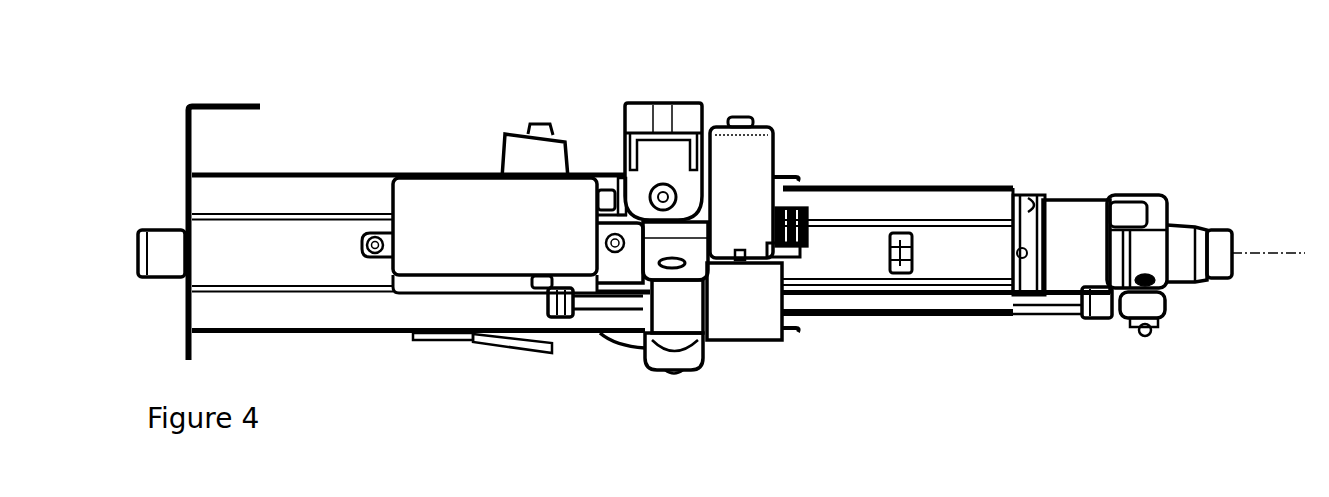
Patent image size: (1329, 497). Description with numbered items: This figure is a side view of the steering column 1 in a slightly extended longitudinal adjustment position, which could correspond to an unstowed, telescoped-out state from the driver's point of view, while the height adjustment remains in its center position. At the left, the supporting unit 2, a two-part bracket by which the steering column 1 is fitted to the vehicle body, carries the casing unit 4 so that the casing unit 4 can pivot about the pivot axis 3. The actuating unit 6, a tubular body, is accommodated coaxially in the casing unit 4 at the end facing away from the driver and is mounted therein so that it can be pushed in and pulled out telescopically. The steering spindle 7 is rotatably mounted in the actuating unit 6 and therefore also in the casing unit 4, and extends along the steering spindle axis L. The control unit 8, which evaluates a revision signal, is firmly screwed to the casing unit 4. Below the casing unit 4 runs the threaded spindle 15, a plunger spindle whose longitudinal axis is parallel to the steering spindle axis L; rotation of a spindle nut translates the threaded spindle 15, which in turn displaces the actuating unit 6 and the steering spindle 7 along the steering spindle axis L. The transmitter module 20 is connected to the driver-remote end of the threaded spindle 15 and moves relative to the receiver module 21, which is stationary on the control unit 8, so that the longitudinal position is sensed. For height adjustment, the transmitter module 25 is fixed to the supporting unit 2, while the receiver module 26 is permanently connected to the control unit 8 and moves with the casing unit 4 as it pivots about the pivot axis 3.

The steering column 1 is at (537, 61).
The supporting unit 2 is at (685, 120).
The pivot axis 3 is at (197, 118).
The casing unit 4 is at (331, 190).
The actuating unit 6 is at (937, 207).
The steering spindle 7 is at (1178, 245).
The control unit 8 is at (478, 202).
The threaded spindle 15 is at (898, 302).
The transmitter module 20 is at (562, 319).
The receiver module 21 is at (538, 291).
The transmitter module 25 is at (618, 203).
The receiver module 26 is at (602, 198).
The steering spindle axis L is at (1297, 252).